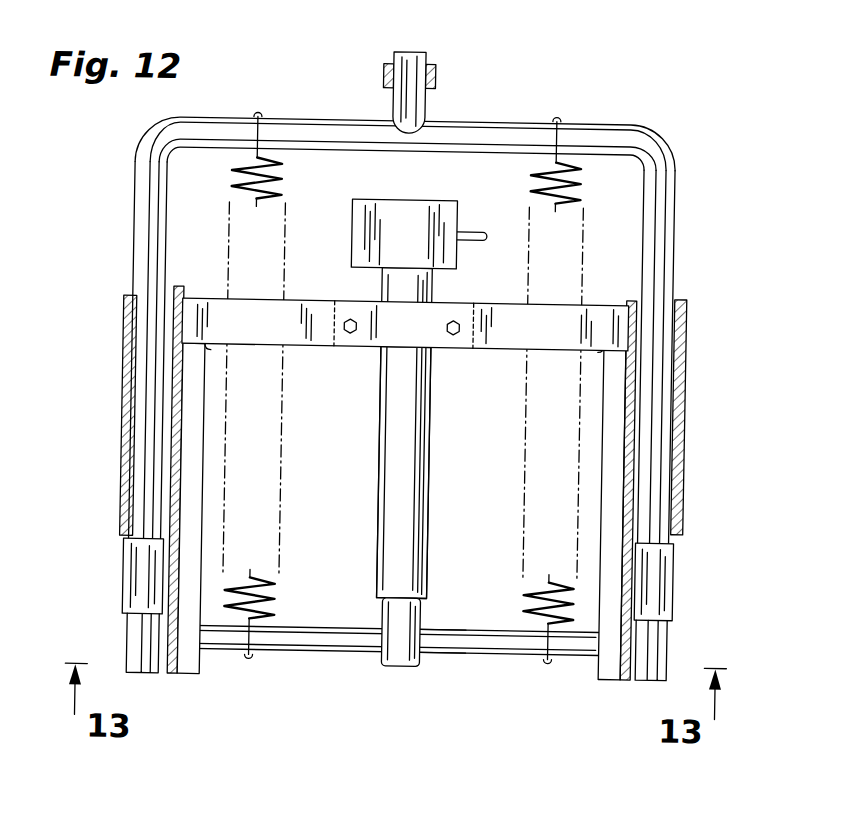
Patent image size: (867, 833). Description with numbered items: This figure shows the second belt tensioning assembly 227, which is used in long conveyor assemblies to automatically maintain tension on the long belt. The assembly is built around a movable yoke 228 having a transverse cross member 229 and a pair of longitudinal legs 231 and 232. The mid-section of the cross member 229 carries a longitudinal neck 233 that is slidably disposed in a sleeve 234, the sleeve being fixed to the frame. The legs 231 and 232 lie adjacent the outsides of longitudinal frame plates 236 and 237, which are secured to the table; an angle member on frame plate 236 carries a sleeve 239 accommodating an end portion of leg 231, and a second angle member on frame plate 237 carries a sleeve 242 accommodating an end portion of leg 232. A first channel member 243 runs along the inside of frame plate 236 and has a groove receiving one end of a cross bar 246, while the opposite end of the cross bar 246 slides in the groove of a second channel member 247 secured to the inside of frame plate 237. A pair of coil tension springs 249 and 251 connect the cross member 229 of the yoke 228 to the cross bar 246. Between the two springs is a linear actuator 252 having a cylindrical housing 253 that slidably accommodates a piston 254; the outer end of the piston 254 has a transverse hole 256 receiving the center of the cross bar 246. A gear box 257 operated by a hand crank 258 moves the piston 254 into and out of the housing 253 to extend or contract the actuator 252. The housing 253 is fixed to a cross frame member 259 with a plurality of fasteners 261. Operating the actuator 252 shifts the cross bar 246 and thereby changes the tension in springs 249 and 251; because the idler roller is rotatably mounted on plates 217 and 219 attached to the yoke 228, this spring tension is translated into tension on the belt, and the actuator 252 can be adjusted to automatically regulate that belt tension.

The plate 217 is at (686, 402).
The plate 219 is at (122, 406).
The belt tensioning assembly 227 is at (399, 286).
The movable yoke 228 is at (123, 222).
The cross member 229 is at (325, 126).
The leg 231 is at (672, 212).
The leg 232 is at (128, 634).
The neck 233 is at (402, 52).
The sleeve 234 is at (430, 72).
The frame plate 236 is at (644, 682).
The frame plate 237 is at (177, 676).
The sleeve 239 is at (678, 585).
The sleeve 242 is at (126, 570).
The channel member 243 is at (600, 668).
The cross bar 246 is at (322, 652).
The channel member 247 is at (200, 670).
The coil tension spring 249 is at (554, 198).
The coil tension spring 251 is at (258, 207).
The linear actuator 252 is at (379, 455).
The cylindrical housing 253 is at (428, 503).
The piston 254 is at (403, 665).
The transverse hole 256 is at (430, 646).
The gear box 257 is at (417, 202).
The hand crank 258 is at (486, 232).
The cross frame member 259 is at (312, 348).
The fasteners 261 is at (350, 314).